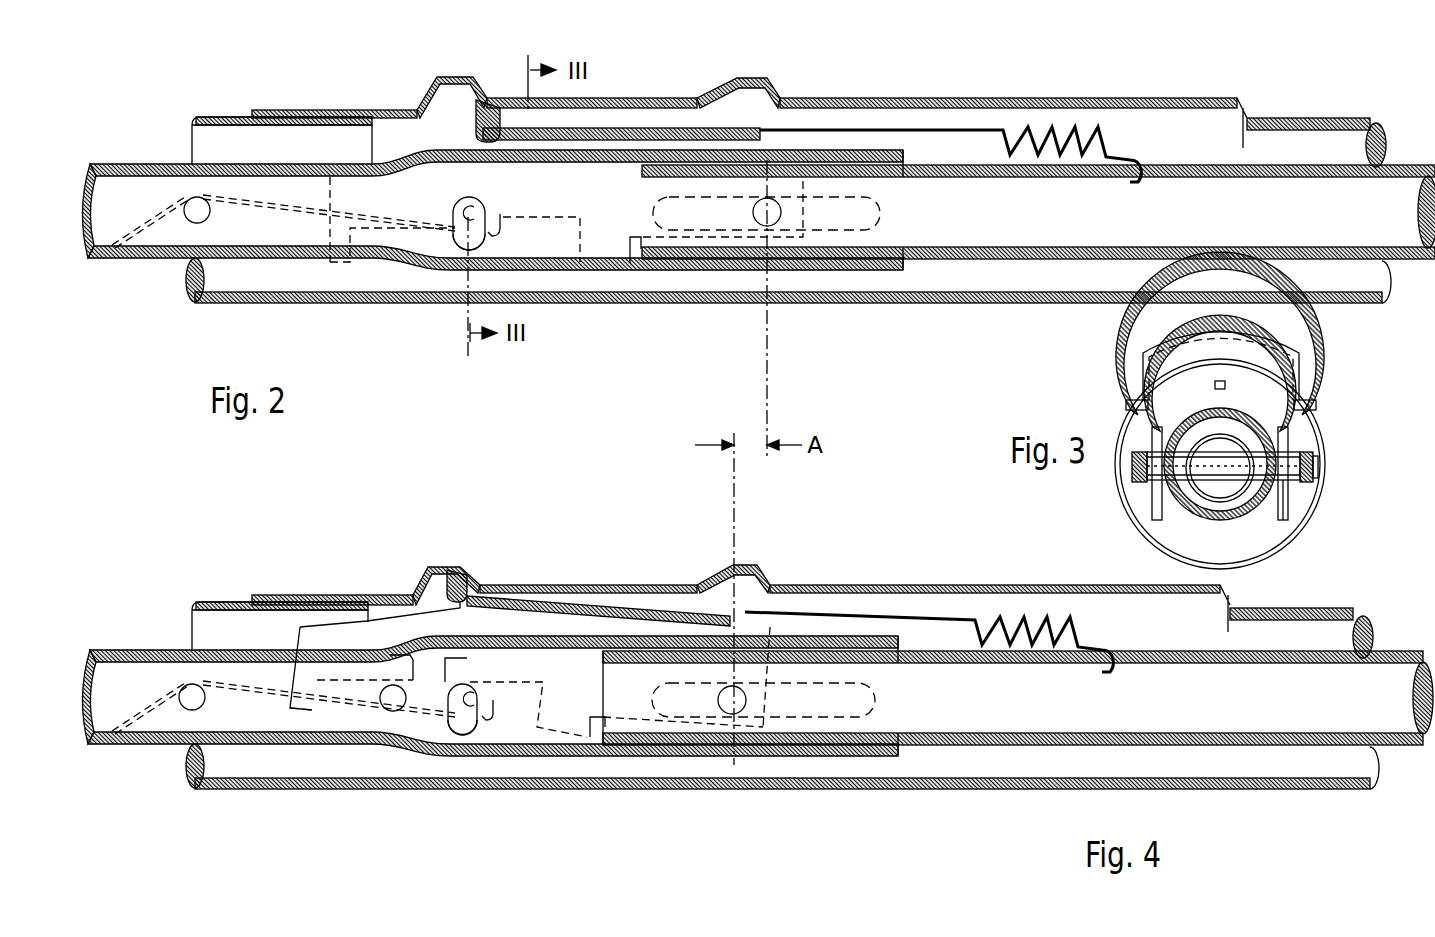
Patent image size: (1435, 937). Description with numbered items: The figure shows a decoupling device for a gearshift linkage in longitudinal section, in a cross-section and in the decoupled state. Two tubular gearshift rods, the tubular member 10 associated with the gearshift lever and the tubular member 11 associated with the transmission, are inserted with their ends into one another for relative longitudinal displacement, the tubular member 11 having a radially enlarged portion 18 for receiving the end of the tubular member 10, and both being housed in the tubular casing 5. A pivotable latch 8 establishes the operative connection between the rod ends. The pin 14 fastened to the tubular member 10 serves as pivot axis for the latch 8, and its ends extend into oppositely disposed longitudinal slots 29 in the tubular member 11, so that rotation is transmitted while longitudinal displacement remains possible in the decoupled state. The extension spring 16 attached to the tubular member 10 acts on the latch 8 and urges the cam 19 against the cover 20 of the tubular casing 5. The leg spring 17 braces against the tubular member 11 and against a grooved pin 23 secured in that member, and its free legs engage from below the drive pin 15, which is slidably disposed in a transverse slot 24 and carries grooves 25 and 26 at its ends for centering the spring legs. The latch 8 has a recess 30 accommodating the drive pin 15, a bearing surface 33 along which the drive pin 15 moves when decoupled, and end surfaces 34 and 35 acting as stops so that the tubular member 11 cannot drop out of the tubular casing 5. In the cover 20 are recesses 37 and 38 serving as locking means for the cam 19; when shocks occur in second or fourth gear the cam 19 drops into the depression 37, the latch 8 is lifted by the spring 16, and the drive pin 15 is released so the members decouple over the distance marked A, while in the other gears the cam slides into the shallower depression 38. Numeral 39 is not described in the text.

In FIG. 2, the tubular casing 5 is at (928, 300).
In FIG. 3, the tubular casing 5 is at (1323, 435).
In FIG. 4, the tubular casing 5 is at (805, 790).
In FIG. 2, the latch 8 is at (604, 172).
In FIG. 3, the latch 8 is at (1277, 420).
In FIG. 4, the latch 8 is at (567, 682).
In FIG. 2, the tubular member 10 is at (963, 253).
In FIG. 3, the tubular member 10 is at (1207, 502).
In FIG. 4, the tubular member 10 is at (1013, 740).
In FIG. 2, the tubular member 11 is at (272, 248).
In FIG. 4, the tubular member 11 is at (152, 737).
In FIG. 2, the pin 14 is at (760, 221).
In FIG. 4, the pin 14 is at (725, 710).
In FIG. 2, the drive pin 15 is at (474, 211).
In FIG. 3, the drive pin 15 is at (1300, 465).
In FIG. 4, the drive pin 15 is at (470, 713).
In FIG. 2, the extension spring 16 is at (1033, 128).
In FIG. 3, the extension spring 16 is at (1226, 384).
In FIG. 4, the extension spring 16 is at (995, 620).
In FIG. 2, the leg spring 17 is at (233, 197).
In FIG. 3, the leg spring 17 is at (1311, 488).
In FIG. 4, the leg spring 17 is at (283, 707).
In FIG. 2, the radially enlarged portion 18 is at (628, 156).
In FIG. 3, the radially enlarged portion 18 is at (1247, 507).
In FIG. 4, the radially enlarged portion 18 is at (461, 623).
In FIG. 2, the cam 19 is at (478, 112).
In FIG. 4, the cam 19 is at (470, 575).
In FIG. 2, the cover 20 is at (671, 98).
In FIG. 3, the cover 20 is at (1282, 412).
In FIG. 4, the cover 20 is at (1015, 586).
In FIG. 2, the pin 23 is at (192, 199).
In FIG. 4, the pin 23 is at (192, 697).
In FIG. 2, the transverse slot 24 is at (466, 238).
In FIG. 3, the transverse slot 24 is at (1290, 513).
In FIG. 4, the transverse slot 24 is at (458, 727).
In FIG. 3, the groove 25 is at (1135, 478).
In FIG. 3, the groove 26 is at (1320, 476).
In FIG. 2, the longitudinal slot 29 is at (835, 207).
In FIG. 4, the longitudinal slot 29 is at (880, 697).
In FIG. 2, the recess 30 is at (462, 206).
In FIG. 4, the recess 30 is at (458, 667).
In FIG. 2, the bearing surface 33 is at (567, 213).
In FIG. 2, the end surface 34 is at (350, 257).
In FIG. 4, the end surface 34 is at (315, 703).
In FIG. 2, the end surface 35 is at (583, 240).
In FIG. 4, the end surface 35 is at (537, 723).
In FIG. 2, the recess 37 is at (462, 77).
In FIG. 4, the recess 37 is at (450, 567).
In FIG. 2, the recess 38 is at (742, 78).
In FIG. 3, the recess 38 is at (1156, 368).
In FIG. 4, the recess 38 is at (745, 565).
In FIG. 4, the hole 39 is at (393, 712).